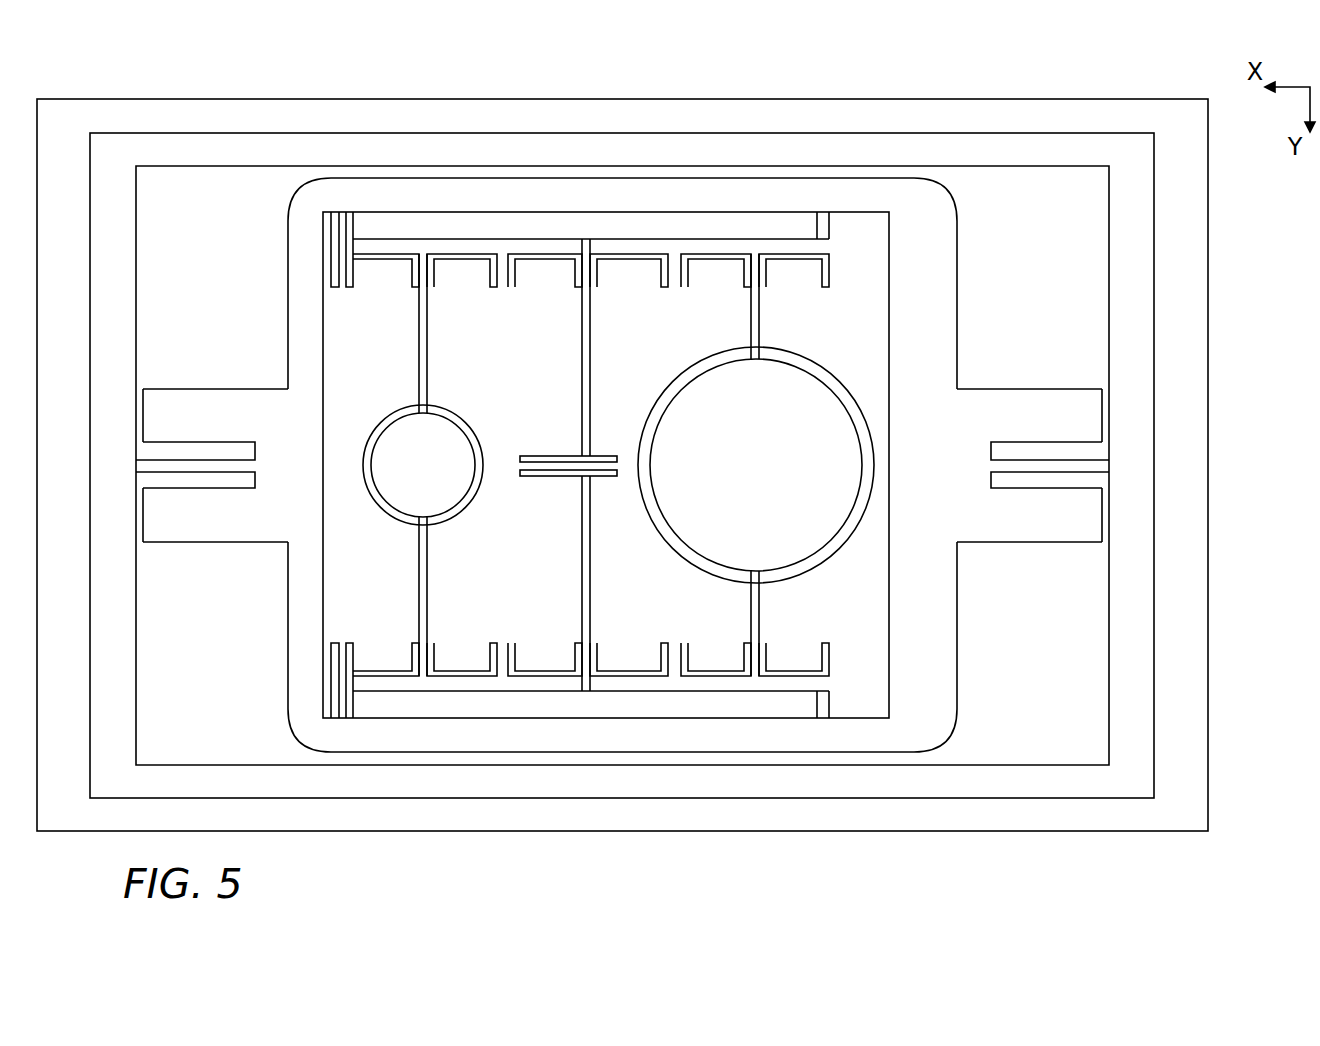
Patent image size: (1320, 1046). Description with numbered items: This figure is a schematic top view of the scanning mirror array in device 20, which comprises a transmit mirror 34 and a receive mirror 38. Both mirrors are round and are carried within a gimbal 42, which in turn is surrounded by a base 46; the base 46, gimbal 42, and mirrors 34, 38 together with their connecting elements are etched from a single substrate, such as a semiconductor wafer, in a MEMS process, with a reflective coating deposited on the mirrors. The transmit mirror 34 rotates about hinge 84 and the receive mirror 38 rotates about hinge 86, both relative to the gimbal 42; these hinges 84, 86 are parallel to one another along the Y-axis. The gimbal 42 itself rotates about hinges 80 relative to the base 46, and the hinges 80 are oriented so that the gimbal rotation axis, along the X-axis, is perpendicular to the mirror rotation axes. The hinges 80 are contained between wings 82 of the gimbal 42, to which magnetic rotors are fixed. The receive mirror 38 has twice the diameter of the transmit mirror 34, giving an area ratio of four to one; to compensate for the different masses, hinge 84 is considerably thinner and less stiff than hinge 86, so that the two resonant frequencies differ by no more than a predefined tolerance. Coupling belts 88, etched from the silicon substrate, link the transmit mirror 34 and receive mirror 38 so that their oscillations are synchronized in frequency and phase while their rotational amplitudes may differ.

The device 20 is at (1253, 853).
The transmit mirror 34 is at (457, 438).
The receive mirror 38 is at (700, 388).
The gimbal 42 is at (298, 198).
The base 46 is at (49, 98).
The hinges 80 is at (178, 465).
The wings 82 is at (177, 388).
The hinge 84 is at (418, 325).
The hinge 86 is at (760, 313).
The coupling belts 88 is at (586, 248).